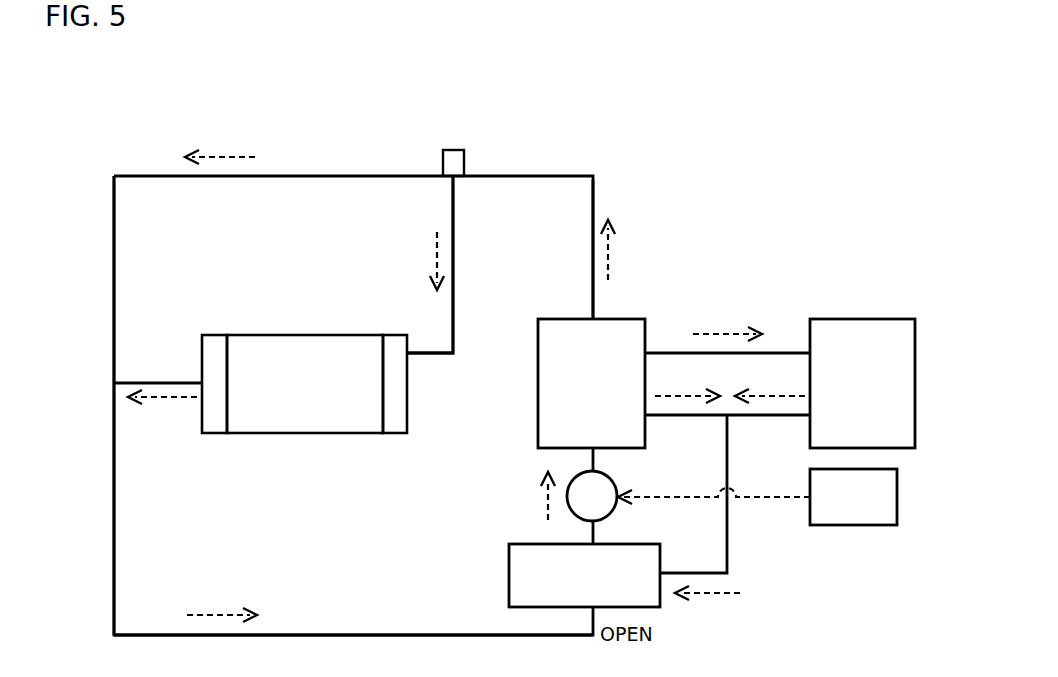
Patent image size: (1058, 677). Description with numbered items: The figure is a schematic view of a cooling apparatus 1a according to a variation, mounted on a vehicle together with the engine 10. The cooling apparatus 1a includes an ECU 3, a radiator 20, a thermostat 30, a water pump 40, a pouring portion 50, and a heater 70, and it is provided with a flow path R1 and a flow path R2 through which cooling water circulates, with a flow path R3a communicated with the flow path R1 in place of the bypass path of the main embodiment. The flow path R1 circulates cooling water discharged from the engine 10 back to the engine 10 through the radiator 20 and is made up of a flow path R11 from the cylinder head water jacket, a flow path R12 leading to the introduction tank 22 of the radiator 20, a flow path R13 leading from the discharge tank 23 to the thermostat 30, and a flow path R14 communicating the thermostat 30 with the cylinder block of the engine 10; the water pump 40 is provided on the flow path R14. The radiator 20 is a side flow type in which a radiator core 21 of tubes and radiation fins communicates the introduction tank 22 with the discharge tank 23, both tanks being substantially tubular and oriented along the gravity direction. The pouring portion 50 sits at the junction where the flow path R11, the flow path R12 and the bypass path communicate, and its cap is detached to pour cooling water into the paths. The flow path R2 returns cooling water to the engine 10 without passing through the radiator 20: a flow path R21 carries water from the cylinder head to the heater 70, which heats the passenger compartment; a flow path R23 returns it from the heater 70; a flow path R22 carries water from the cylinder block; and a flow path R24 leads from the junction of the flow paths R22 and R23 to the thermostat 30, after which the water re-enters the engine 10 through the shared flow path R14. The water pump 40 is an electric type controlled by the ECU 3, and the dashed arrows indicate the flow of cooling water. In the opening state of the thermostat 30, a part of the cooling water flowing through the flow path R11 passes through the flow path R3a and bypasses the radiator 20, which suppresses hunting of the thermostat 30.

The cooling apparatus 1a is at (900, 273).
The Electronic Control Unit (ECU) 3 is at (897, 496).
The engine 10 is at (596, 360).
The radiator 20 is at (343, 333).
The radiator core 21 is at (278, 335).
The introduction tank 22 is at (407, 415).
The discharge tank 23 is at (202, 350).
The thermostat 30 is at (660, 555).
The water pump 40 is at (610, 517).
The pouring portion 50 is at (456, 150).
The heater 70 is at (915, 340).
The flow path R1 is at (555, 165).
The flow path R11 is at (593, 196).
The flow path R12 is at (453, 305).
The flow path R13 is at (418, 633).
The flow path R14 is at (596, 460).
The flow path R2 is at (805, 290).
The flow path R21 is at (778, 350).
The flow path R22 is at (702, 420).
The flow path R23 is at (780, 420).
The flow path R24 is at (727, 553).
The flow path R3a is at (113, 227).